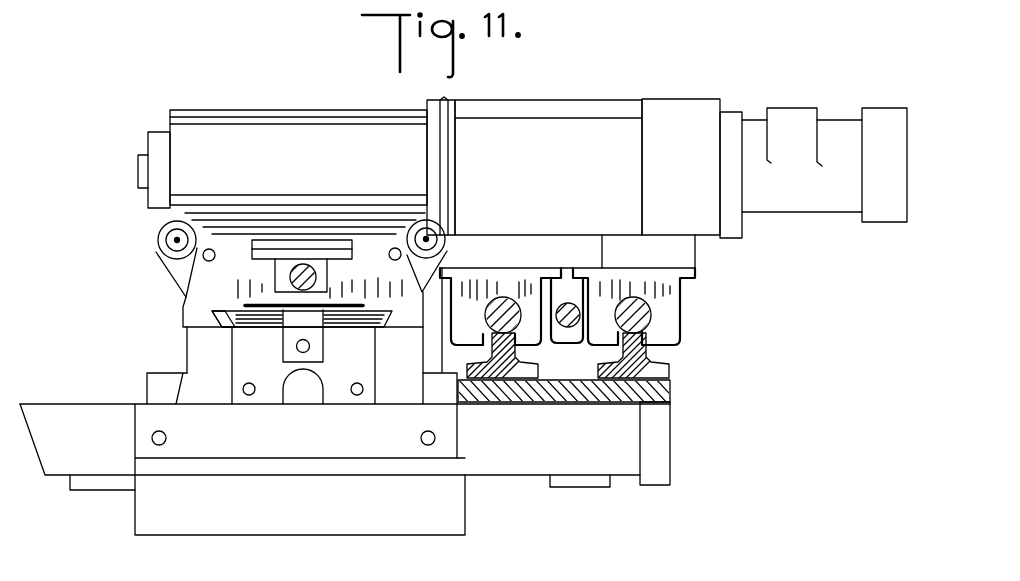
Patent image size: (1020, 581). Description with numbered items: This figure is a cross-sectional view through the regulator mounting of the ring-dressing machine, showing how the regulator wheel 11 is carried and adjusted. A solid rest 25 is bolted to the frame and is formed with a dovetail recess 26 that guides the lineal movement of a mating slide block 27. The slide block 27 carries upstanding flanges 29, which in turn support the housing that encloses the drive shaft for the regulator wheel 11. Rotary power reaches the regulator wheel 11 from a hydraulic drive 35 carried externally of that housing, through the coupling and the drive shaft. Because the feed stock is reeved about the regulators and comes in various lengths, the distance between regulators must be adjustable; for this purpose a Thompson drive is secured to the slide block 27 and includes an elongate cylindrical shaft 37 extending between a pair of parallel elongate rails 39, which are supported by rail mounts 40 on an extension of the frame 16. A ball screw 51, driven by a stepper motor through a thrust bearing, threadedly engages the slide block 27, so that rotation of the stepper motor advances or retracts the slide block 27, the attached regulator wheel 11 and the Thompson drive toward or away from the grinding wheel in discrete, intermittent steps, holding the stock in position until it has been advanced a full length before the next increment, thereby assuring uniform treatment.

The regulator wheel 11 is at (188, 115).
The hydraulic drive 35 is at (821, 197).
The upstanding flanges 29 is at (165, 250).
The solid rest 25 is at (195, 299).
The slide block 27 is at (239, 318).
The dovetail recess 26 is at (222, 318).
The ball screw 51 is at (318, 277).
The rails 39 is at (503, 298).
The shaft 37 is at (568, 327).
The rail mounts 40 is at (672, 370).
The frame 16 is at (660, 430).